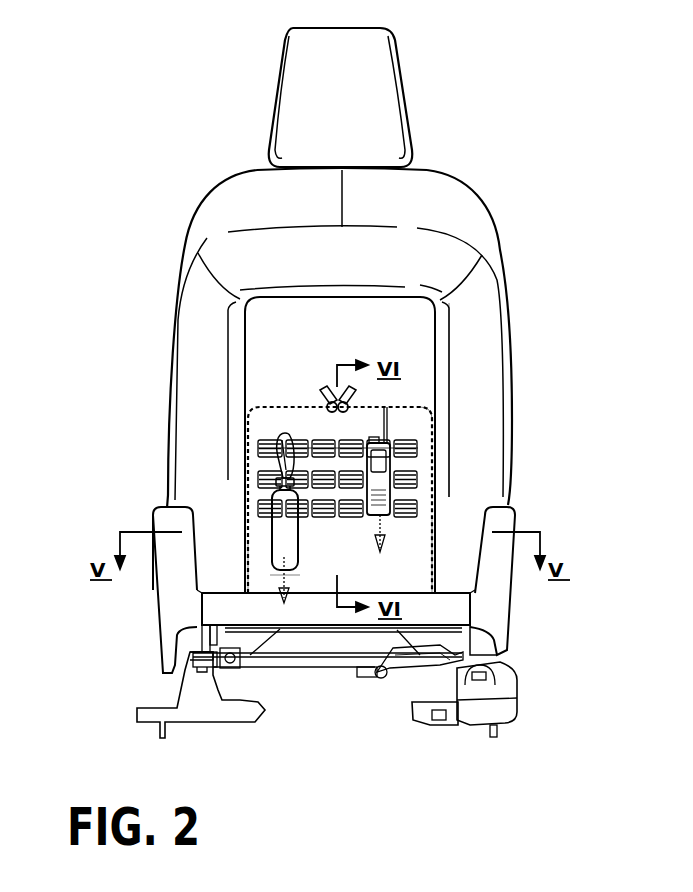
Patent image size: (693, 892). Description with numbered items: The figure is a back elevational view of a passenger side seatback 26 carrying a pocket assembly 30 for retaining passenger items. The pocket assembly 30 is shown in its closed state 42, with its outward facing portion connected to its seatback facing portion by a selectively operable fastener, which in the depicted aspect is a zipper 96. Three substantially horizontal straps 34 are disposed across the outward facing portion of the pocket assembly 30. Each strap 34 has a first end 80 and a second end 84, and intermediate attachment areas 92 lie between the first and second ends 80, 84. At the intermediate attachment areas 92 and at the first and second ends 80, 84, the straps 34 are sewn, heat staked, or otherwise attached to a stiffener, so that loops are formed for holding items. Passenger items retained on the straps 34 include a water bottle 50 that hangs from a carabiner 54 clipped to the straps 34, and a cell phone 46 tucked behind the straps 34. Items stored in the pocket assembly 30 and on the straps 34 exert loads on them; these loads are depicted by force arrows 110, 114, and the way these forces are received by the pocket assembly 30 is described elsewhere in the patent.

The passenger side seatback 26 is at (453, 197).
The pocket assembly 30 is at (256, 405).
The substantially horizontal straps 34 is at (412, 446).
The closed state 42 is at (464, 366).
The cell phone 46 is at (428, 403).
The water bottle 50 is at (283, 537).
The carabiner 54 is at (275, 458).
The first end 80 is at (258, 443).
The second end 84 is at (383, 450).
The intermediate attachment areas 92 is at (325, 392).
The zipper 96 is at (247, 565).
The force arrow 110 is at (290, 590).
The force arrow 114 is at (437, 547).